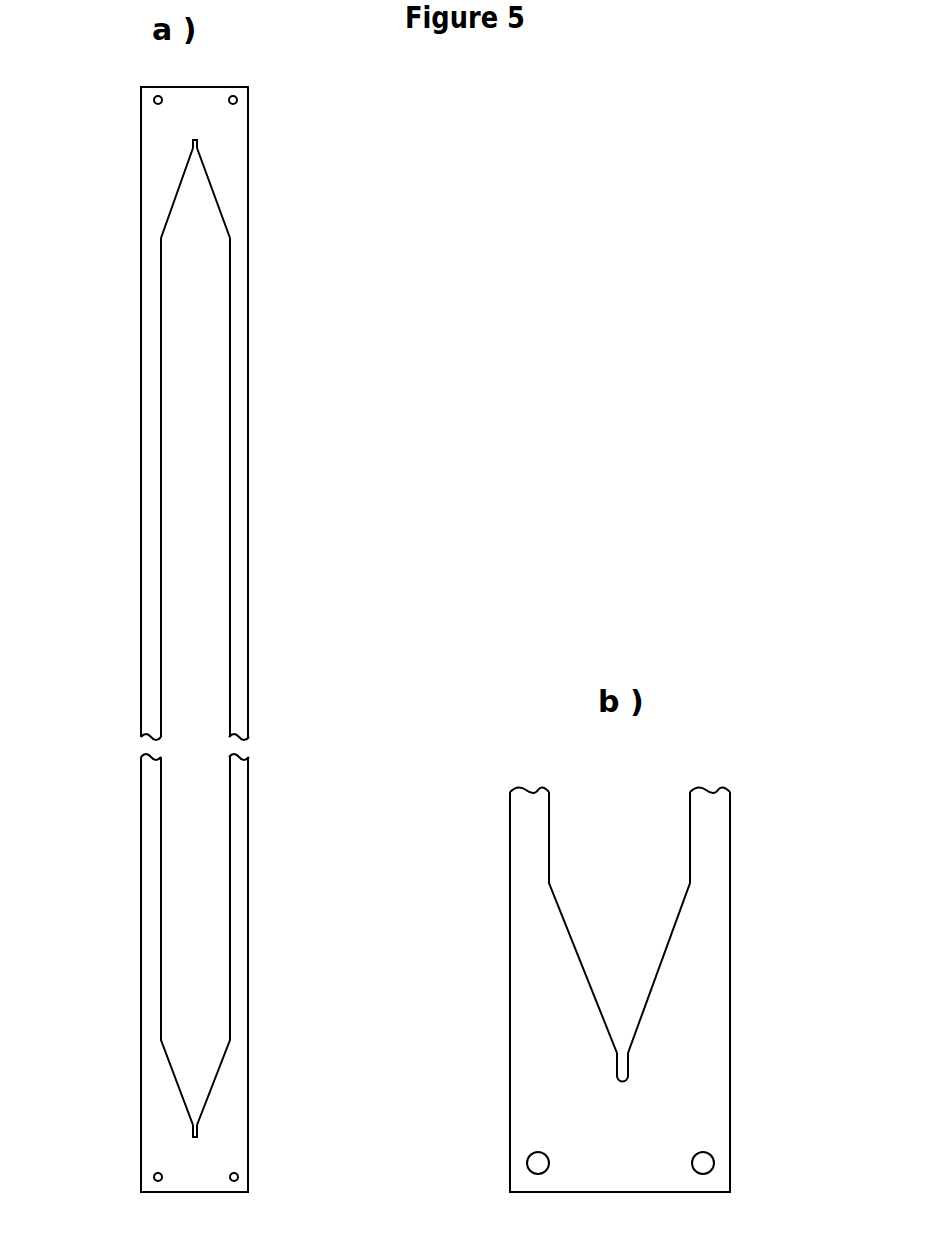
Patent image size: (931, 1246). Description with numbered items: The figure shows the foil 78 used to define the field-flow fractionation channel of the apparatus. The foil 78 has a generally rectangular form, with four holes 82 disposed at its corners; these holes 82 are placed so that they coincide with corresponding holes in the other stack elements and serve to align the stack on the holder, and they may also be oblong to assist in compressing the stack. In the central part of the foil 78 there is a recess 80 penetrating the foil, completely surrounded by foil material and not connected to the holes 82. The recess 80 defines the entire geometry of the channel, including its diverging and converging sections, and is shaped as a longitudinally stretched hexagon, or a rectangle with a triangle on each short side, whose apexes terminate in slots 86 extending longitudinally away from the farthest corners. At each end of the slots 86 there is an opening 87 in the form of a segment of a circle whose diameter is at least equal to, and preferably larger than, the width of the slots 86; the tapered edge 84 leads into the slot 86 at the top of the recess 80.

In FIG. 5a, the foil 78 is at (153, 197).
In FIG. 5b, the foil 78 is at (703, 988).
In FIG. 5a, the recess 80 is at (212, 632).
In FIG. 5b, the recess 80 is at (658, 852).
In FIG. 5a, the holes 82 is at (154, 100).
In FIG. 5b, the holes 82 is at (538, 1163).
In FIG. 5a, the tapered slot edge 84 is at (199, 150).
In FIG. 5a, the slots 86 is at (197, 142).
In FIG. 5b, the slots 86 is at (622, 1070).
In FIG. 5b, the opening 87 is at (618, 1083).